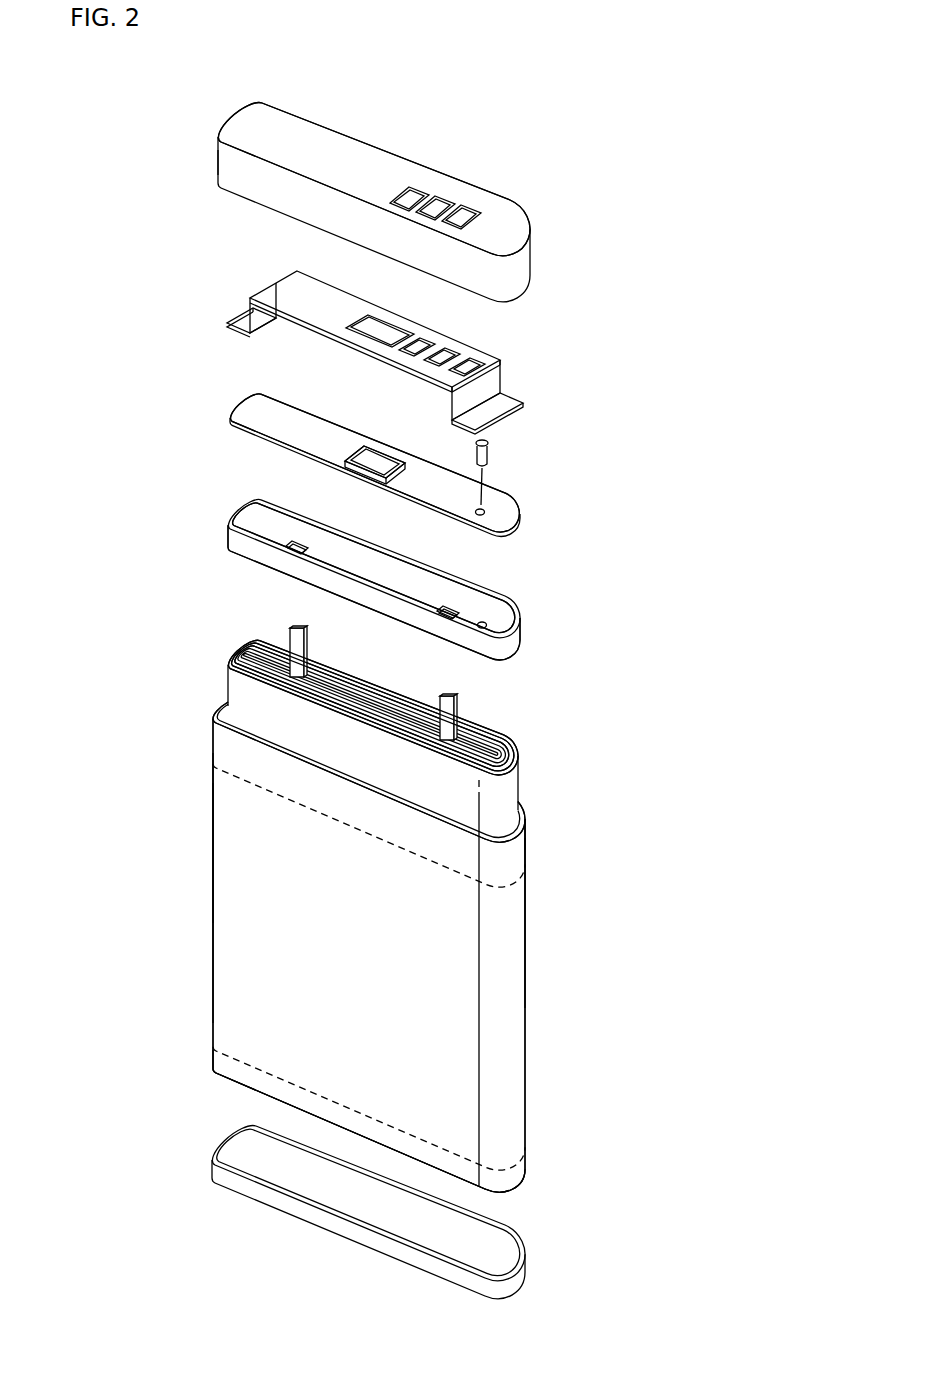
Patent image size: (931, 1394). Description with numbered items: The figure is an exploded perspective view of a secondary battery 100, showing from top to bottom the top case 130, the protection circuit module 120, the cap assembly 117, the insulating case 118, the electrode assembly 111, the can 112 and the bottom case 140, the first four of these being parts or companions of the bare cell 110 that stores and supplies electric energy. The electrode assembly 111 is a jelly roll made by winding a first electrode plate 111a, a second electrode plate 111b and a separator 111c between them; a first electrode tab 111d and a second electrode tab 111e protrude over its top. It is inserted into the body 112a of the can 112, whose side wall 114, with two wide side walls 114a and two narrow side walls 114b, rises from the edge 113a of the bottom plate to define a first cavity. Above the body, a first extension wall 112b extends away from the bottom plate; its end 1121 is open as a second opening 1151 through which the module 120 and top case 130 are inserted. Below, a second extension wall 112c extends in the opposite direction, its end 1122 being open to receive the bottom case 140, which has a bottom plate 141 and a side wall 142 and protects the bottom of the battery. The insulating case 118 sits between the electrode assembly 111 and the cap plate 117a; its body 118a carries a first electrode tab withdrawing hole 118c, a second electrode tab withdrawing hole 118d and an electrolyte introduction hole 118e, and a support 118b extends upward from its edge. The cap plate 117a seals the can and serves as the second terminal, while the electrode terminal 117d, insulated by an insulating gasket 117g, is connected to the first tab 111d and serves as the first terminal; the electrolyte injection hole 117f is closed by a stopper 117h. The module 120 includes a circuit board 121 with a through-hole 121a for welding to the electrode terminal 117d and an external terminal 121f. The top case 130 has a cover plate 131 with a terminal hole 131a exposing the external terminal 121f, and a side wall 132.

The secondary battery 100 is at (541, 150).
The bare cell 110 is at (135, 448).
The electrode assembly 111 is at (226, 687).
The first electrode plate 111a is at (490, 738).
The second electrode plate 111b is at (522, 755).
The separator 111c is at (507, 747).
The first electrode tab 111d is at (447, 698).
The second electrode tab 111e is at (297, 632).
The can 112 is at (213, 747).
The body 112a is at (519, 1035).
The first extension wall 112b is at (521, 843).
The second extension wall 112c is at (524, 1165).
The end of the first extension wall 1121 is at (264, 752).
The end of the second extension wall 1122 is at (230, 1087).
The edge of the bottom plate 113a is at (214, 1070).
The side wall 114 is at (465, 979).
The wide side walls 114a is at (224, 963).
The narrow side walls 114b is at (212, 895).
The second opening 1151 is at (519, 812).
The cap assembly 117 is at (240, 414).
The cap plate 117a is at (303, 418).
The electrode terminal 117d is at (368, 452).
The electrolyte injection hole 117f is at (487, 508).
The insulating gasket 117g is at (405, 463).
The stopper 117h is at (492, 441).
The insulating case 118 is at (230, 539).
The body of the insulating case 118a is at (520, 613).
The support 118b is at (521, 636).
The first electrode tab withdrawing hole 118c is at (450, 608).
The second electrode tab withdrawing hole 118d is at (300, 542).
The electrolyte introduction hole 118e is at (486, 622).
The protection circuit module 120 is at (264, 280).
The circuit board 121 is at (316, 289).
The through-hole 121a is at (390, 332).
The external terminal 121f is at (465, 364).
The top case 130 is at (214, 131).
The cover plate 131 is at (360, 148).
The terminal hole 131a is at (412, 189).
The side wall of the top case 132 is at (226, 167).
The bottom case 140 is at (528, 1251).
The bottom plate of the bottom case 141 is at (353, 1210).
The side wall of the bottom case 142 is at (268, 1185).